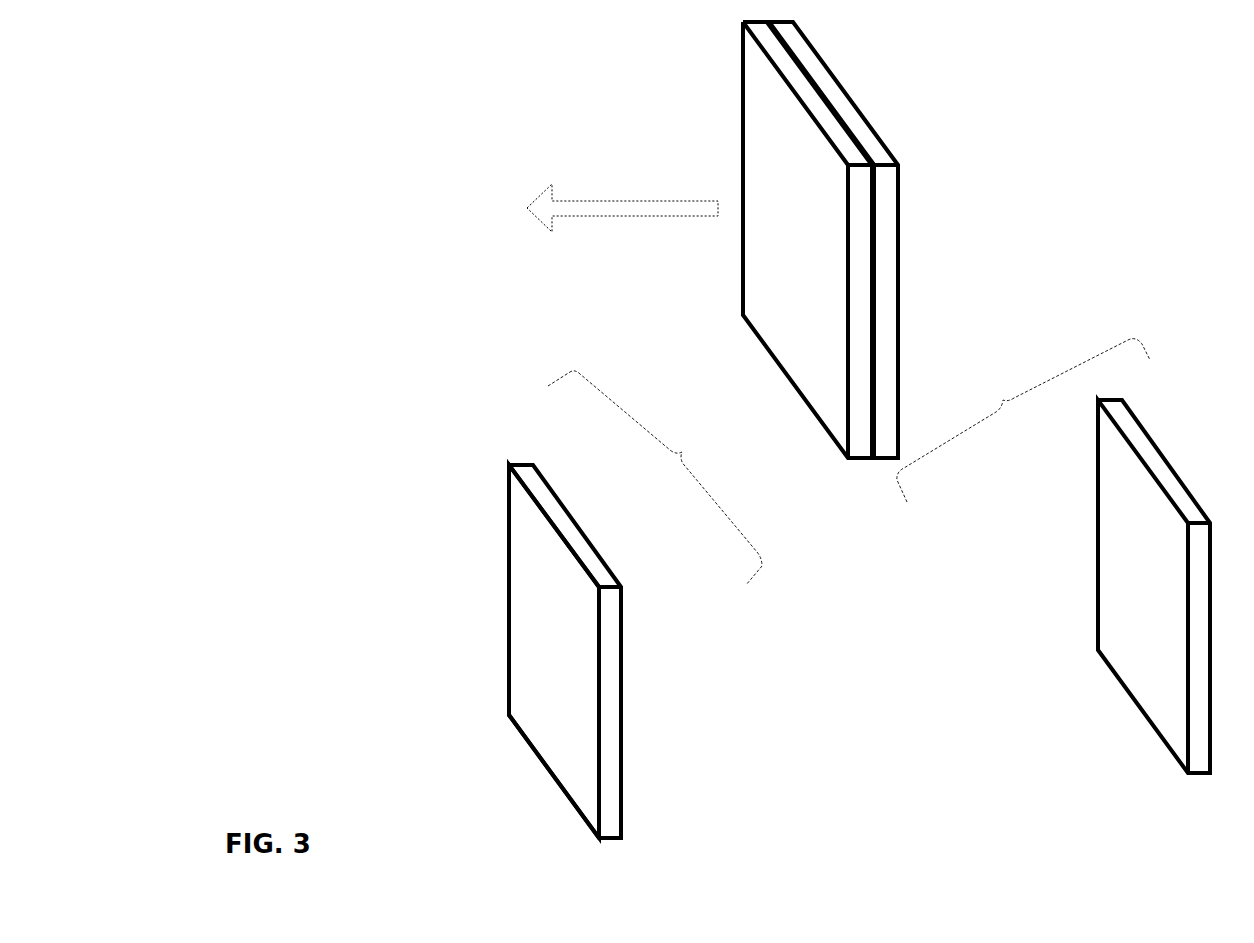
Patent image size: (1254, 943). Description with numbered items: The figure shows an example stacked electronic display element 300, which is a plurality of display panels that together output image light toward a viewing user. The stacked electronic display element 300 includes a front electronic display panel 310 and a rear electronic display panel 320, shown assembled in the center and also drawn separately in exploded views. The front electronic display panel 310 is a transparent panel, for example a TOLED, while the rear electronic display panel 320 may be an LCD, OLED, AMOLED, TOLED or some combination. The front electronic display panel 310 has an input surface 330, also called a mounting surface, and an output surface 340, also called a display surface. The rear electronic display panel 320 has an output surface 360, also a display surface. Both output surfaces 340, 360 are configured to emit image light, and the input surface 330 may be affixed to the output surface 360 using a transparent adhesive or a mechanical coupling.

The stacked electronic display element 300 is at (266, 71).
The front electronic display panel 310 is at (840, 398).
The rear electronic display panel 320 is at (890, 331).
The input surface 330 is at (655, 620).
The output surface 340 is at (550, 603).
The output surface 360 is at (1145, 543).